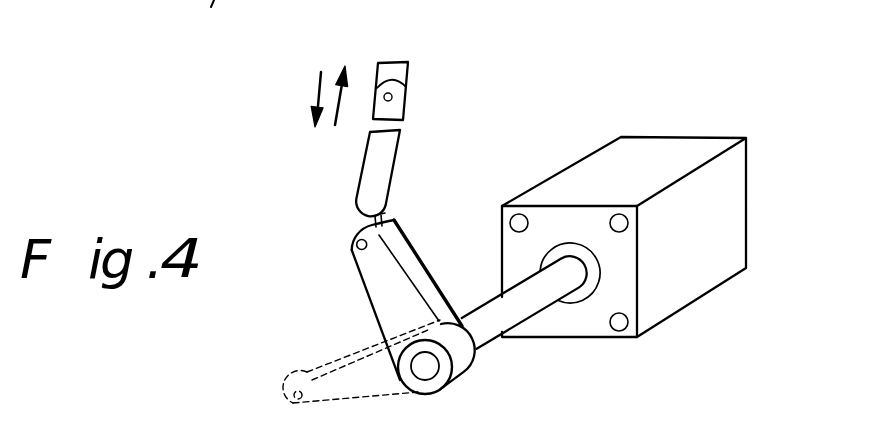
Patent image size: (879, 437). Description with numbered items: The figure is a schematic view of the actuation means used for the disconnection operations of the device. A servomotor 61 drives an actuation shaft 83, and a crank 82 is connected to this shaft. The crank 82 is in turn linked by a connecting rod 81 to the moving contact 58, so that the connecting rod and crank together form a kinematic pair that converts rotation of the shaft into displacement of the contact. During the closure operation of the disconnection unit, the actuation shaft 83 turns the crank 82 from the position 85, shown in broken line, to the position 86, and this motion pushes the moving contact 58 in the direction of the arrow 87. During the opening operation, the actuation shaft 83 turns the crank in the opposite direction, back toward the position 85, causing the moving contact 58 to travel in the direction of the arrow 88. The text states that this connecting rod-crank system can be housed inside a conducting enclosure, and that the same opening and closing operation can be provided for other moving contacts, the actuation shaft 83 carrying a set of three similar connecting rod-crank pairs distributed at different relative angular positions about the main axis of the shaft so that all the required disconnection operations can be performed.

The servomotor 61 is at (619, 142).
The actuation shaft 83 is at (522, 334).
The crank 82 is at (431, 257).
The position of the crank 86 is at (344, 266).
The connecting rod 81 is at (396, 175).
The moving contact 58 is at (424, 78).
The position of the crank 85 is at (262, 390).
The arrow 87 is at (348, 96).
The arrow 88 is at (320, 97).